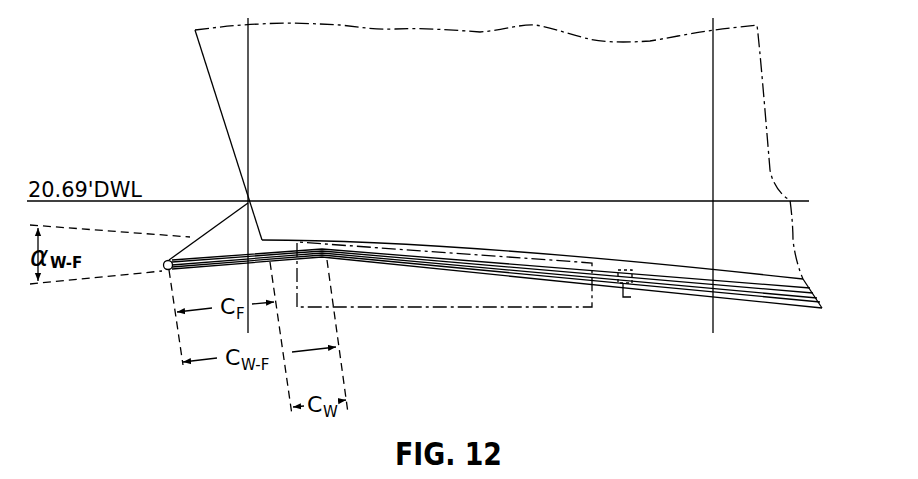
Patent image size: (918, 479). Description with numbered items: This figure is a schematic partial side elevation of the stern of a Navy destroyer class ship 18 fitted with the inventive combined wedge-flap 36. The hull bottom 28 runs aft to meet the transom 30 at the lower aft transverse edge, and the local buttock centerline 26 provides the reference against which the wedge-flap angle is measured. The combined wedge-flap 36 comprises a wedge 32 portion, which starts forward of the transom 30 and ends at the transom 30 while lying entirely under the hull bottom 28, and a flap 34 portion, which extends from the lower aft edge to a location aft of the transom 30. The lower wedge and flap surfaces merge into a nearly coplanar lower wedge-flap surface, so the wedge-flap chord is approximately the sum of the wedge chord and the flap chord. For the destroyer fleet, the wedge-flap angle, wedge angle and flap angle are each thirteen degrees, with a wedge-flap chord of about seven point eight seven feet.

The ship 18 is at (798, 130).
The buttock centerline 26 is at (608, 286).
The hull bottom 28 is at (748, 300).
The transom 30 is at (218, 102).
The stern wedge 32 is at (287, 233).
The stern flap 34 is at (216, 220).
The combined stern wedge-flap 36 is at (163, 285).